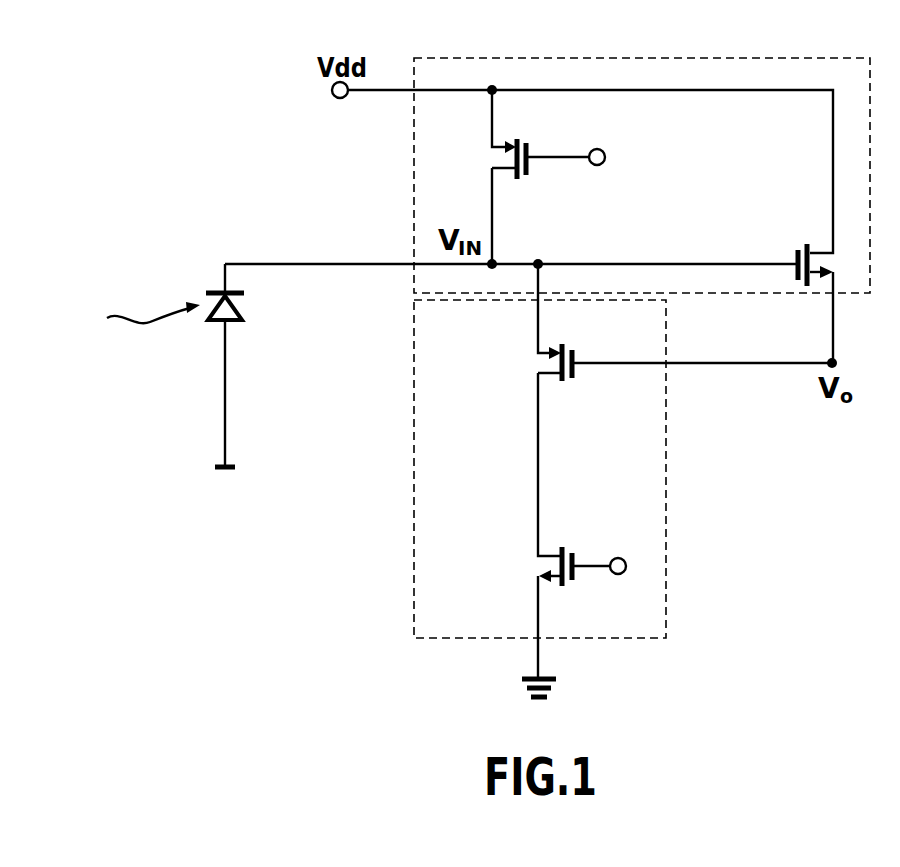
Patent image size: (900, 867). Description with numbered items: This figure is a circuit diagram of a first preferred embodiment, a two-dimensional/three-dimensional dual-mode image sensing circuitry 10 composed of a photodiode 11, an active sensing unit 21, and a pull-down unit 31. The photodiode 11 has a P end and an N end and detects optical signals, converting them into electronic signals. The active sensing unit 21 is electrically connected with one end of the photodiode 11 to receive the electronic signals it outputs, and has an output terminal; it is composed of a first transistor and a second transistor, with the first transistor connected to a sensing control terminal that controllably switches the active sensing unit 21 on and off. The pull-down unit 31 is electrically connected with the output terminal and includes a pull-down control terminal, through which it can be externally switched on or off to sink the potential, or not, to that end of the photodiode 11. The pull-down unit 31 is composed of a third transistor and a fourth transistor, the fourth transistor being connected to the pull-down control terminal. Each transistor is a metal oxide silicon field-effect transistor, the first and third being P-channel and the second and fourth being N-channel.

The 2D/3D dual-mode image sensing circuitry 10 is at (182, 556).
The photodiode 11 is at (246, 312).
The active sensing unit 21 is at (640, 58).
The pull-down unit 31 is at (414, 468).